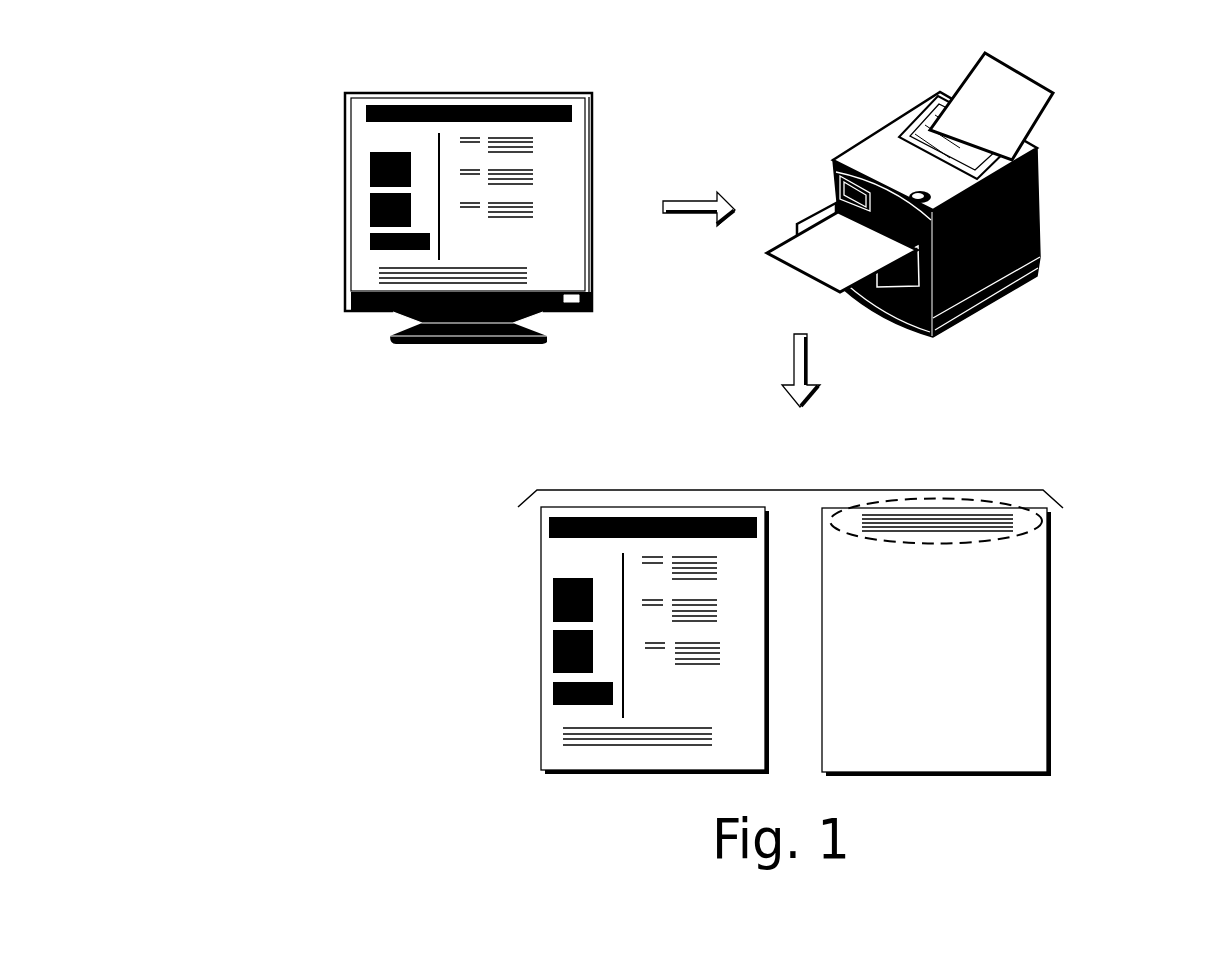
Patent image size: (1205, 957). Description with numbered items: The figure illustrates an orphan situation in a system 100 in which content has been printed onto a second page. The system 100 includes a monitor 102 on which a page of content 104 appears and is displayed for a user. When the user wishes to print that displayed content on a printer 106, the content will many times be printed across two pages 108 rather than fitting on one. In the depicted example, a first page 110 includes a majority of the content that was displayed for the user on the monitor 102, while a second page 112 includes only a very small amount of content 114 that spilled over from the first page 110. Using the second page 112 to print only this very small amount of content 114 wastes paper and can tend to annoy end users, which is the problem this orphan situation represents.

The system 100 is at (304, 60).
The monitor 102 is at (345, 122).
The page of content 104 is at (562, 158).
The printer 106 is at (882, 132).
The pages 108 is at (803, 490).
The first page 110 is at (541, 637).
The second page 112 is at (1048, 627).
The content 114 is at (1036, 531).